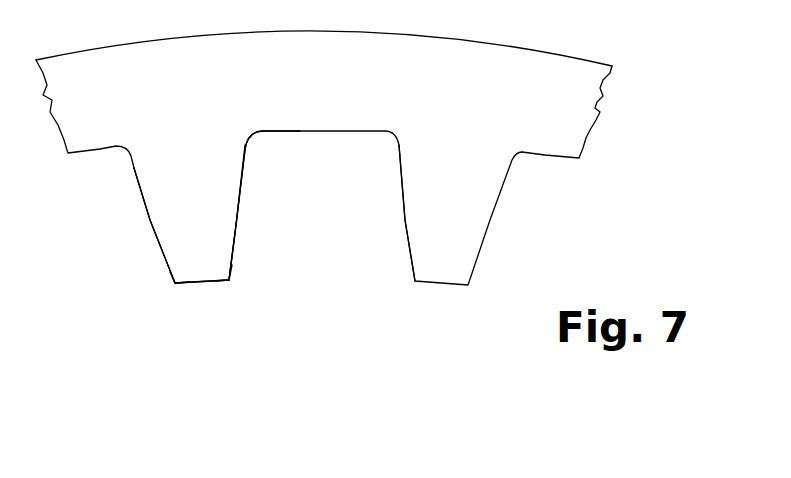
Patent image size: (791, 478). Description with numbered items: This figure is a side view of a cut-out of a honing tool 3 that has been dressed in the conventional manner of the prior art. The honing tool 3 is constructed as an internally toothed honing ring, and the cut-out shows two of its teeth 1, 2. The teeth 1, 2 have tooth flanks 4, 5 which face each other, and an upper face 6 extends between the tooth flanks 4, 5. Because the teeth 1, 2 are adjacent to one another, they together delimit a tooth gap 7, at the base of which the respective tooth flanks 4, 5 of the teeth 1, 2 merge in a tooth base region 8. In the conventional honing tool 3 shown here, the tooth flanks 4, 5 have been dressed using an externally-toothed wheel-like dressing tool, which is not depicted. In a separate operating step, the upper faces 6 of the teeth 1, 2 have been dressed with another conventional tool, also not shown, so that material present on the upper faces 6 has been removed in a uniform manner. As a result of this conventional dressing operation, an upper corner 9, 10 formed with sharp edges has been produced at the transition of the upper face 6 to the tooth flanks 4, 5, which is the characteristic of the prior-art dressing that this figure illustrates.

The tooth 1 is at (189, 214).
The tooth 2 is at (460, 215).
The honing tool 3 is at (530, 97).
The tooth flank 4 is at (147, 219).
The tooth flank 5 is at (246, 213).
The upper face 6 is at (205, 283).
The tooth gap 7 is at (322, 206).
The tooth base region 8 is at (264, 152).
The upper corner 9 is at (231, 284).
The upper corner 10 is at (172, 285).